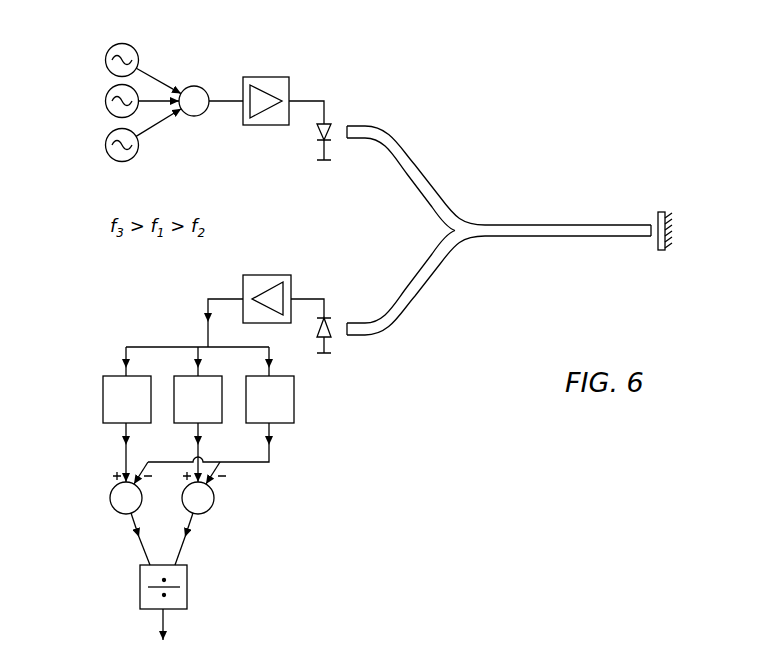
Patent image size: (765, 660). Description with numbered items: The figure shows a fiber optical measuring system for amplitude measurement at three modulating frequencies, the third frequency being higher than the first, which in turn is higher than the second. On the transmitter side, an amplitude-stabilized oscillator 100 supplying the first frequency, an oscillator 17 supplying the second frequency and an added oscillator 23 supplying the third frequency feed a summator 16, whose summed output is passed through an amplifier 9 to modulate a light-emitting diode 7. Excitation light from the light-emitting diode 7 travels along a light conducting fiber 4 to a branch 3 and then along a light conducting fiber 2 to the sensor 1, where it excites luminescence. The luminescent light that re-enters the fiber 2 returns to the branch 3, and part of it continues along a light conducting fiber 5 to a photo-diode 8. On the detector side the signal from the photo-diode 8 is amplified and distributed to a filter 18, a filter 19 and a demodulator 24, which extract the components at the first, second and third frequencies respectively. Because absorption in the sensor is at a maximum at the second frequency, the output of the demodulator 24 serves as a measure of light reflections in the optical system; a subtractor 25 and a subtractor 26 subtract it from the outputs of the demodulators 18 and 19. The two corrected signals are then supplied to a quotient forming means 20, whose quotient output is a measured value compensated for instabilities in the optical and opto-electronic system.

The sensor 1 is at (660, 251).
The light conducting fiber 2 is at (548, 222).
The branch 3 is at (460, 218).
The light conducting fiber 4 is at (413, 163).
The light conducting fiber 5 is at (425, 280).
The light-emitting diode 7 is at (317, 132).
The photo-diode 8 is at (332, 340).
The amplifier 9 is at (277, 77).
The summator 16 is at (203, 86).
The oscillator 17 is at (137, 107).
The filter 18 is at (117, 423).
The filter 19 is at (190, 423).
The quotient forming means 20 is at (187, 585).
The oscillator 23 is at (127, 160).
The demodulator 24 is at (262, 423).
The subtractor 25 is at (120, 514).
The subtractor 26 is at (212, 512).
The oscillator 100 is at (133, 50).